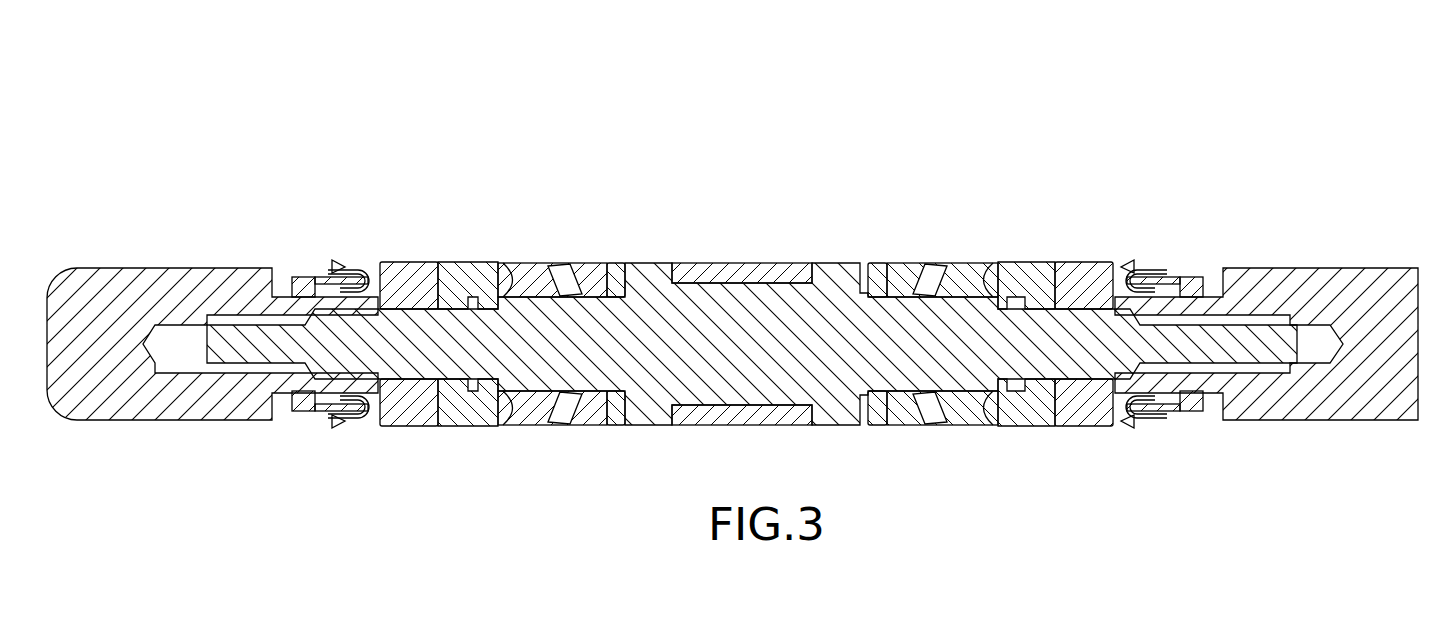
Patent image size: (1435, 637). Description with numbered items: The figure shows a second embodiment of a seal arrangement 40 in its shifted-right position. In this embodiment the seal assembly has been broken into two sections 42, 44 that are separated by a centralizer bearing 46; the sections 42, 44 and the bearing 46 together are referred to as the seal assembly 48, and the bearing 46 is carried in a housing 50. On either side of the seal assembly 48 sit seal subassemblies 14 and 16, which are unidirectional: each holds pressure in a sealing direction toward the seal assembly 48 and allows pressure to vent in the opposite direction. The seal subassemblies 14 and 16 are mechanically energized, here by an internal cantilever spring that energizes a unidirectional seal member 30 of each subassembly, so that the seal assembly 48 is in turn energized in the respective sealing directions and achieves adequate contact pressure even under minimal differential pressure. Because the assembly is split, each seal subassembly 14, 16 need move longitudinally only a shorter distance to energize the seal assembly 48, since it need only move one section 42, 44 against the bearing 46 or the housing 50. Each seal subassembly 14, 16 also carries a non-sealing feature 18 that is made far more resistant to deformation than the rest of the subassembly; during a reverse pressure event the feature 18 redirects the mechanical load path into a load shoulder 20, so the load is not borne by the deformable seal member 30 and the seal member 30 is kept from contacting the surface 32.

The seal subassembly 14 is at (398, 262).
The seal subassembly 16 is at (1100, 262).
The non-sealing feature 18 is at (447, 262).
The load shoulder 20 is at (370, 268).
The unidirectional seal member 30 is at (1160, 266).
The surface 32 is at (282, 268).
The seal arrangement 40 is at (1047, 138).
The section 42 is at (547, 246).
The section 44 is at (941, 250).
The centralizer bearing 46 is at (727, 262).
The seal assembly 48 is at (997, 150).
The housing 50 is at (832, 290).